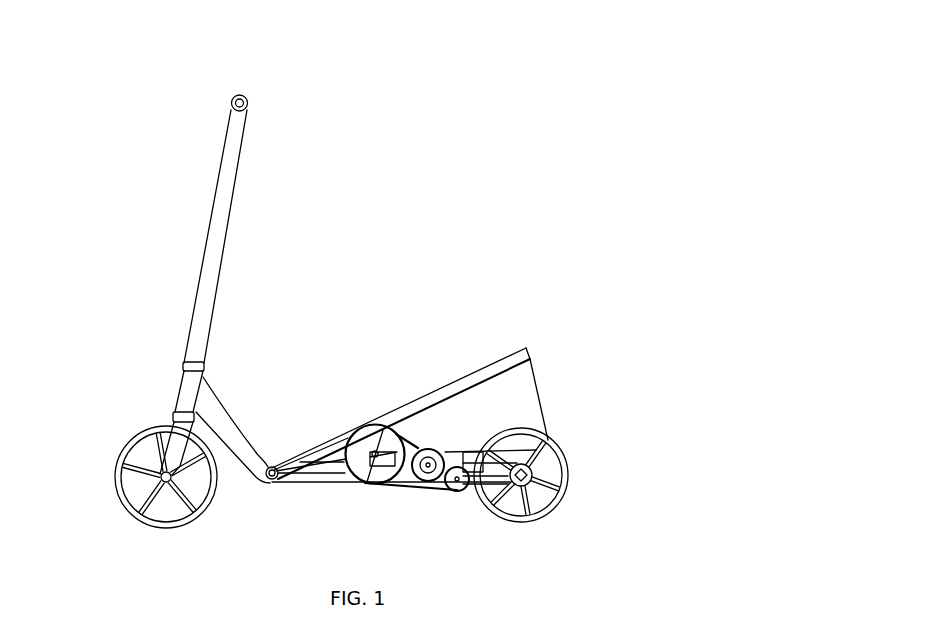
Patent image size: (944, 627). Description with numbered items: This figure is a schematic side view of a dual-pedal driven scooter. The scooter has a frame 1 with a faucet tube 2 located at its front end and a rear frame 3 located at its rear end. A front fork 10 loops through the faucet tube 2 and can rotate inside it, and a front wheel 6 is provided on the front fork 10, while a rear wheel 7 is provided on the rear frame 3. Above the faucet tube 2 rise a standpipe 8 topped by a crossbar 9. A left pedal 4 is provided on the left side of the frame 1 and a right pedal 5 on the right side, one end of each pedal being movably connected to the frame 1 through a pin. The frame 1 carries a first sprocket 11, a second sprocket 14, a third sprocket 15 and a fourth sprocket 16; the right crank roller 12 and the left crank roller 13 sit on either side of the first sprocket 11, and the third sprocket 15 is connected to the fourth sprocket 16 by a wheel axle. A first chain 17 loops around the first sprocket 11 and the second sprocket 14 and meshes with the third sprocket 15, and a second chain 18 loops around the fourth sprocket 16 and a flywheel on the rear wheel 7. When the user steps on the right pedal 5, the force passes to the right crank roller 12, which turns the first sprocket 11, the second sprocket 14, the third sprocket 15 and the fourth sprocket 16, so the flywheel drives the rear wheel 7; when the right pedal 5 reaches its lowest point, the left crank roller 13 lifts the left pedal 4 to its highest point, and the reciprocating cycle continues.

The frame 1 is at (318, 484).
The faucet tube 2 is at (178, 390).
The rear frame 3 is at (505, 492).
The left pedal 4 is at (545, 432).
The right pedal 5 is at (492, 363).
The front wheel 6 is at (123, 458).
The rear wheel 7 is at (569, 474).
The standpipe 8 is at (207, 249).
The crossbar 9 is at (231, 104).
The front fork 10 is at (163, 428).
The first sprocket 11 is at (338, 428).
The right crank roller 12 is at (372, 428).
The left crank roller 13 is at (364, 484).
The second sprocket 14 is at (460, 492).
The third sprocket 15 is at (266, 481).
The fourth sprocket 16 is at (430, 449).
The first chain 17 is at (420, 488).
The second chain 18 is at (458, 448).